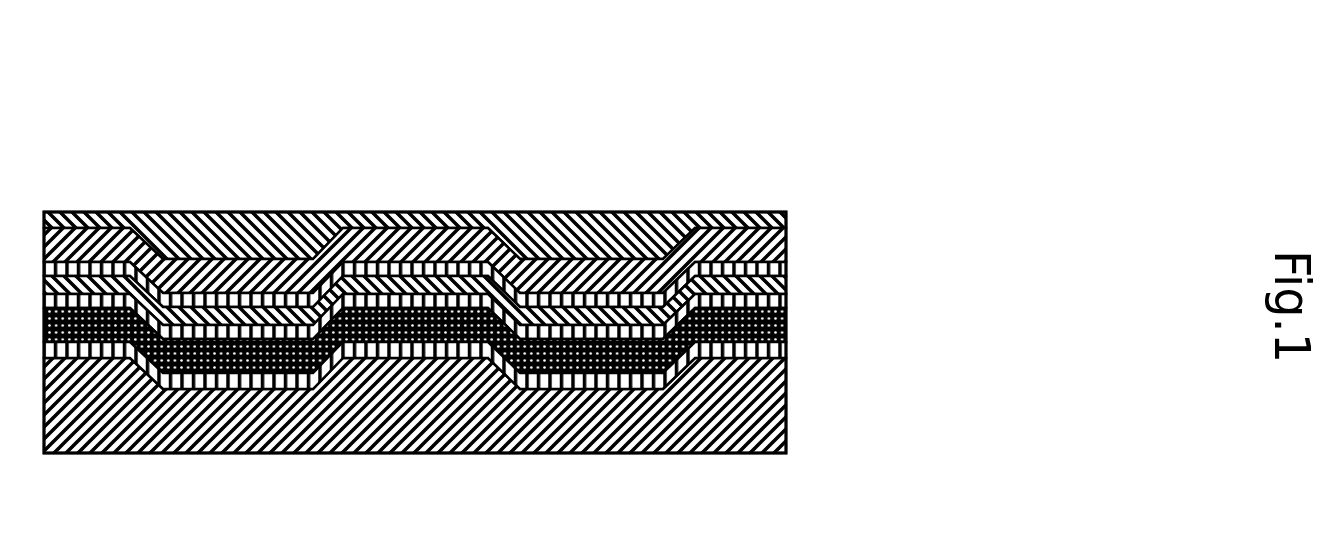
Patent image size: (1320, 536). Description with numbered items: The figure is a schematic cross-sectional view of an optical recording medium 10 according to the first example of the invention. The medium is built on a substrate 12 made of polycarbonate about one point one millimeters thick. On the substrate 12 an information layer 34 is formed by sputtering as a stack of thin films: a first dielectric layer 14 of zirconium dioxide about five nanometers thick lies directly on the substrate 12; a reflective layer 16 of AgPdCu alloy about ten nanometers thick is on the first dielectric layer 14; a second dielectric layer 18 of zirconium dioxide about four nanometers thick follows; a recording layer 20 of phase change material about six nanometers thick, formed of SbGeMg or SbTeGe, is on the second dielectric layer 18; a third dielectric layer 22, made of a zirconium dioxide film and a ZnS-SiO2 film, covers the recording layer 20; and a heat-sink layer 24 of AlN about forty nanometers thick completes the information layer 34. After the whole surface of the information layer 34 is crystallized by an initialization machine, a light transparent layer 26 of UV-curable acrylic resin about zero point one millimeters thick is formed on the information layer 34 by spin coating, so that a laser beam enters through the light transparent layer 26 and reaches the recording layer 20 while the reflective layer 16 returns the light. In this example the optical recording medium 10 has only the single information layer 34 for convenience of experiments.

The optical recording medium 10 is at (455, 122).
The substrate 12 is at (787, 420).
The first dielectric layer 14 is at (451, 367).
The reflective layer 16 is at (787, 327).
The second dielectric layer 18 is at (787, 300).
The recording layer 20 is at (787, 282).
The third dielectric layer 22 is at (785, 262).
The heat-sink layer 24 is at (785, 235).
The light transparent layer 26 is at (782, 208).
The information layer 34 is at (523, 291).